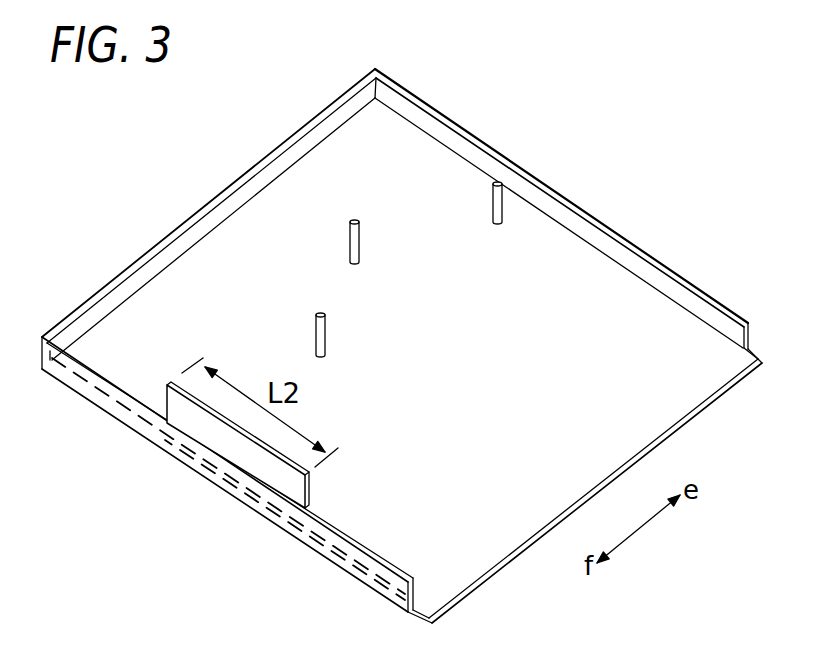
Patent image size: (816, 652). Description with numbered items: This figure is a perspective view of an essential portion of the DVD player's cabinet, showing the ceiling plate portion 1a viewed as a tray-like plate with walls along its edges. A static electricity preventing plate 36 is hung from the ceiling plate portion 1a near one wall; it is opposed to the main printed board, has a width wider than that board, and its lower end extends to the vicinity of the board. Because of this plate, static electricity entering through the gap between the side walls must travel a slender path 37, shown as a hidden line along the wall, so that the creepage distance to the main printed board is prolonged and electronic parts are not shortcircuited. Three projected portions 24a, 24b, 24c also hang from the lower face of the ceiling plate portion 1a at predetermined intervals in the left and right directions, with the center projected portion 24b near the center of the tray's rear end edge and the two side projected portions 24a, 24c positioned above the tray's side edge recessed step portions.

The ceiling plate portion 1a is at (480, 543).
The slender path 37 is at (188, 421).
The static electricity preventing plate 36 is at (307, 488).
The projected portion 24a is at (323, 355).
The projected portion 24b is at (357, 262).
The projected portion 24c is at (500, 222).